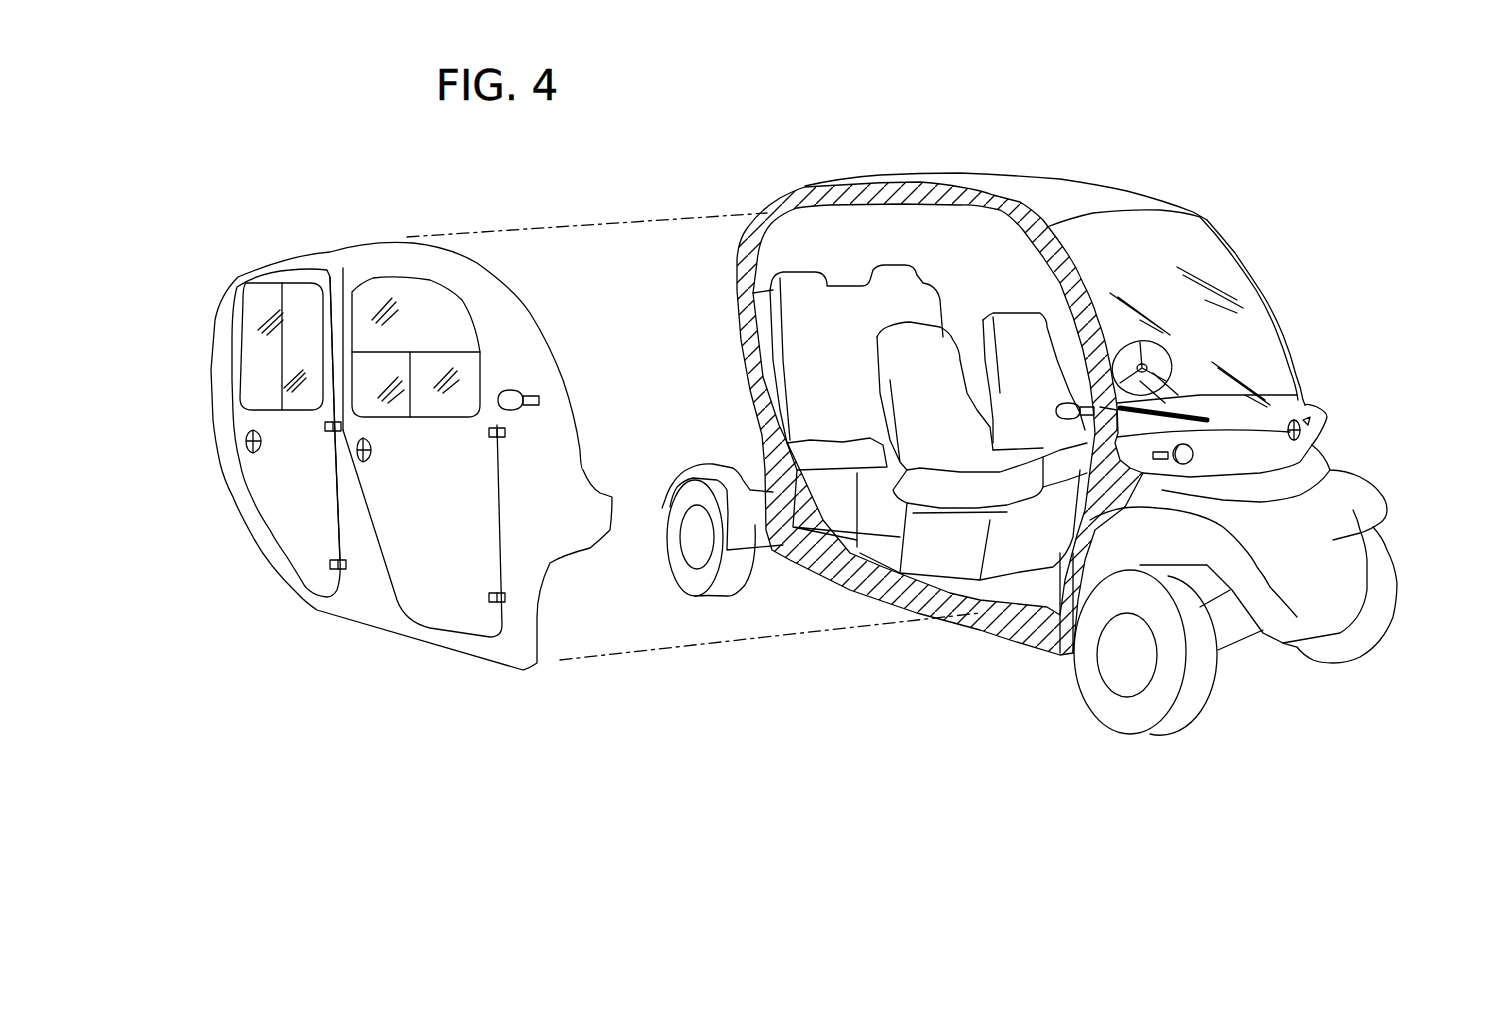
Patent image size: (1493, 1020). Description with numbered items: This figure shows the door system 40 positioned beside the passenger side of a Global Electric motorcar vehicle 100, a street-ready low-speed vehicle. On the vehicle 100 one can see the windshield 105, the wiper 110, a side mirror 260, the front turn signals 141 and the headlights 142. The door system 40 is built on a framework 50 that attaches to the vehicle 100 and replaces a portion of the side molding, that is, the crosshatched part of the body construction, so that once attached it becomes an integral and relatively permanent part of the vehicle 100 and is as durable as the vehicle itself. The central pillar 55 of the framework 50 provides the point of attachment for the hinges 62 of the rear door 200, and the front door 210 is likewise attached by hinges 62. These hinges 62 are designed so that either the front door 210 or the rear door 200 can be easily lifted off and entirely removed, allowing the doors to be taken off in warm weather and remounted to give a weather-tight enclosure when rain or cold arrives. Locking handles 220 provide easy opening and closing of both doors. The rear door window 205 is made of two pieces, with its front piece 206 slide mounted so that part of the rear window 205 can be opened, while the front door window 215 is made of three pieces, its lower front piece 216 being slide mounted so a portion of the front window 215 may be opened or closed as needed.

The door system 40 is at (272, 190).
The framework 50 is at (237, 262).
The central pillar 55 is at (333, 285).
The hinges 62 is at (328, 427).
The vehicle 100 is at (1253, 245).
The windshield 105 is at (1238, 298).
The wiper 110 is at (1200, 383).
The front turn signals 141 is at (1307, 420).
The headlights 142 is at (1194, 455).
The rear door 200 is at (285, 507).
The rear door window 205 is at (272, 352).
The front piece 206 is at (300, 303).
The front door 210 is at (473, 523).
The front door window 215 is at (417, 333).
The lower front piece 216 is at (470, 385).
The locking handles 220 is at (360, 450).
The side mirror 260 is at (523, 390).